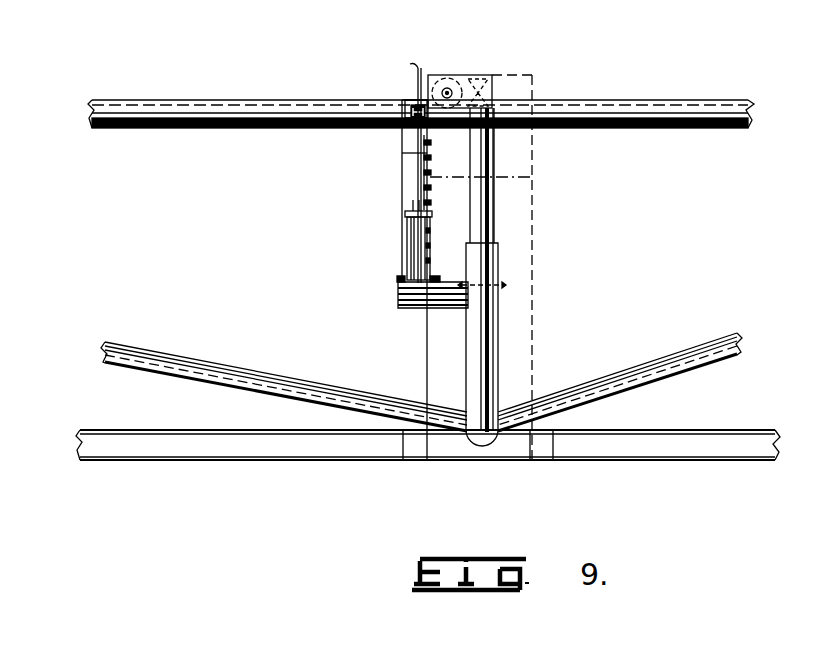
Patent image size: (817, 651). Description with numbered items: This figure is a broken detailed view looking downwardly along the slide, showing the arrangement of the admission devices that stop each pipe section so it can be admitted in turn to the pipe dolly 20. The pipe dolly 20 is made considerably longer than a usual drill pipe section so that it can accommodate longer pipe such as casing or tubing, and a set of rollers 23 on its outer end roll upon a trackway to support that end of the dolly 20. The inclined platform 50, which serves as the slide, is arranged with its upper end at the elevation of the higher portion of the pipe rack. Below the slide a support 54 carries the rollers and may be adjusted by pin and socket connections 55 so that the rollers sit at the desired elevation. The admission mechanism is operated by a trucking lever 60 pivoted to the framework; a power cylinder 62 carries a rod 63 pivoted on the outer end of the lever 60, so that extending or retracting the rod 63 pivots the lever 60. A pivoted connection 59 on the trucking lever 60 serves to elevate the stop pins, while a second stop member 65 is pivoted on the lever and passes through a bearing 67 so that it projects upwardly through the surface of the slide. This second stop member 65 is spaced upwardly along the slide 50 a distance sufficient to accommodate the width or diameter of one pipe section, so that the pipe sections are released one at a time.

The pipe dolly 20 is at (233, 100).
The rollers 23 is at (456, 84).
The inclined platform 50 is at (532, 76).
The support 54 is at (496, 218).
The pin and socket connections 55 is at (504, 285).
The pivoted connection 59 is at (418, 137).
The trucking lever 60 is at (432, 186).
The power cylinder 62 is at (415, 256).
The rod 63 is at (413, 205).
The second stop member 65 is at (417, 72).
The bearing 67 is at (415, 107).